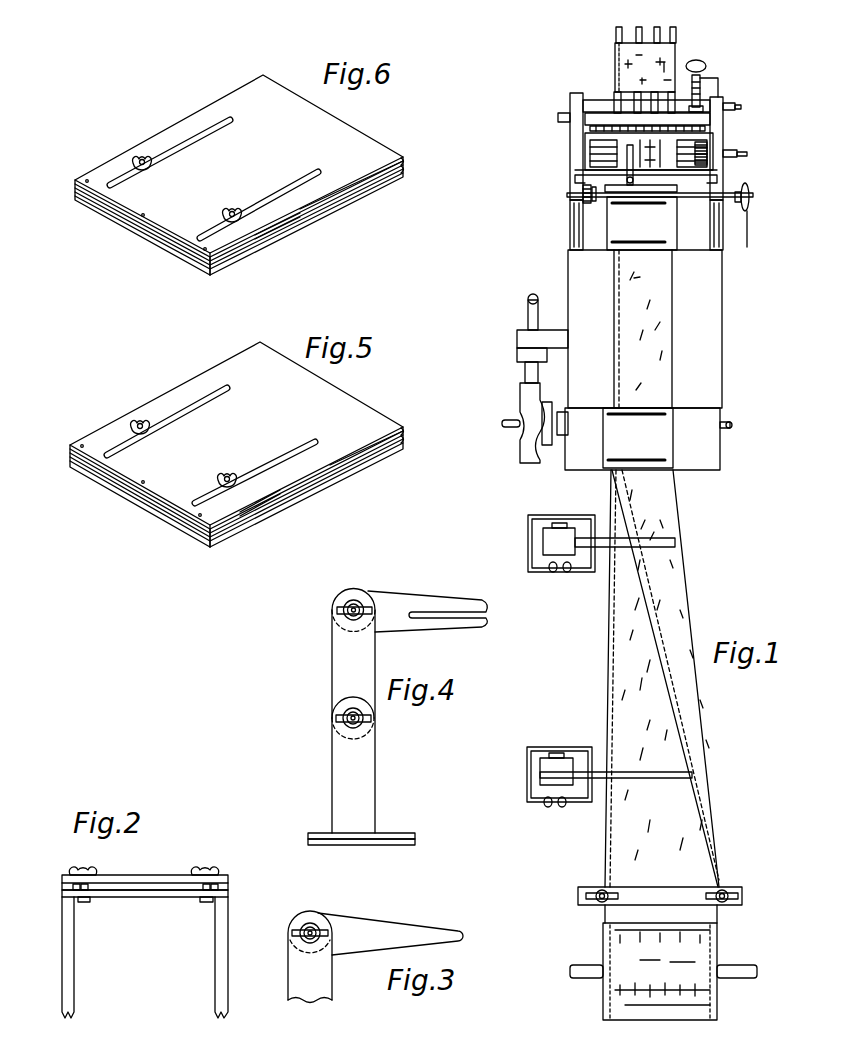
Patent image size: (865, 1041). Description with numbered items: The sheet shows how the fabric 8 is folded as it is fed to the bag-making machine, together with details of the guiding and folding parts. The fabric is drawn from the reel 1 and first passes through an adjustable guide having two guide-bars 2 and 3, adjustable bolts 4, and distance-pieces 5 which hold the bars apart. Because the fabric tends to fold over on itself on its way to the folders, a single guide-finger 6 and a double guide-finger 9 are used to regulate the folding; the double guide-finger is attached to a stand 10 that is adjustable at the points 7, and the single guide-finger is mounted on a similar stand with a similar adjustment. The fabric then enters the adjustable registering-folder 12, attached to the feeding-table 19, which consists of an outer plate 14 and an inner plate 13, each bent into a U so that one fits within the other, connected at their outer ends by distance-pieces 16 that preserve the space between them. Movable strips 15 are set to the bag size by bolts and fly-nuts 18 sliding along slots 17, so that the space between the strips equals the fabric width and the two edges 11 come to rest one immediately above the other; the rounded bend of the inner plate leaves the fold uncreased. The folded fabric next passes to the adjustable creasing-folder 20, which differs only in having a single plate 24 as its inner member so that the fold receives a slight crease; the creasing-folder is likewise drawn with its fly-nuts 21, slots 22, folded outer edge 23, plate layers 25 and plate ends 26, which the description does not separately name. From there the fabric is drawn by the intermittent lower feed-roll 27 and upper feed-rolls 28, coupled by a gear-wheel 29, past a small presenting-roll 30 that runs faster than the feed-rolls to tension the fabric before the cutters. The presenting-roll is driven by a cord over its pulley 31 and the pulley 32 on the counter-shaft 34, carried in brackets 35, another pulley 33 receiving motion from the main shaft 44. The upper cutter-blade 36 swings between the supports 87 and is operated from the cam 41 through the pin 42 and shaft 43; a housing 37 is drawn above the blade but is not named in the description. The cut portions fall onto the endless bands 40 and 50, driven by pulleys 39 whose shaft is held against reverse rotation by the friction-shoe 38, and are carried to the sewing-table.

In FIG. 1, the reel 1 is at (663, 971).
In FIG. 1, the guide-bar 2 is at (735, 888).
In FIG. 2, the guide-bar 2 is at (228, 878).
In FIG. 2, the guide-bar 3 is at (228, 890).
In FIG. 2, the adjustable bolts 4 is at (78, 862).
In FIG. 2, the distance-pieces 5 is at (62, 887).
In FIG. 1, the single guide-finger 6 is at (616, 785).
In FIG. 3, the single guide-finger 6 is at (387, 928).
In FIG. 1, the adjustment points 7 is at (567, 572).
In FIG. 4, the adjustment points 7 is at (337, 610).
In FIG. 3, the adjustment points 7 is at (292, 935).
In FIG. 1, the fabric 8 is at (667, 608).
In FIG. 1, the double guide-finger 9 is at (675, 548).
In FIG. 4, the double guide-finger 9 is at (453, 603).
In FIG. 1, the stand 10 is at (532, 767).
In FIG. 4, the stand 10 is at (362, 782).
In FIG. 1, the edges 11 is at (613, 322).
In FIG. 5, the adjustable registering-folder 12 is at (236, 444).
In FIG. 1, the adjustable registering-folder 12 is at (660, 433).
In FIG. 5, the inner plate 13 is at (380, 445).
In FIG. 5, the outer plate 14 is at (404, 422).
In FIG. 5, the movable strips 15 is at (262, 508).
In FIG. 5, the distance-pieces 16 is at (213, 530).
In FIG. 5, the slots 17 is at (226, 387).
In FIG. 5, the bolts and fly-nuts 18 is at (150, 420).
In FIG. 1, the feeding-table 19 is at (702, 297).
In FIG. 6, the adjustable creasing-folder 20 is at (239, 175).
In FIG. 1, the adjustable creasing-folder 20 is at (642, 223).
In FIG. 6, the wing nut 21 is at (152, 155).
In FIG. 6, the slot 22 is at (233, 119).
In FIG. 6, the fold 23 is at (389, 144).
In FIG. 6, the single plate 24 is at (390, 178).
In FIG. 6, the sheet layers 25 is at (268, 243).
In FIG. 6, the sheet ends 26 is at (212, 270).
In FIG. 1, the lower feed-roll 27 is at (608, 143).
In FIG. 1, the upper feed-rolls 28 is at (708, 137).
In FIG. 1, the gear-wheel 29 is at (710, 160).
In FIG. 1, the presenting-roll 30 is at (600, 127).
In FIG. 1, the pulley 31 is at (588, 125).
In FIG. 1, the pulley 32 is at (587, 205).
In FIG. 1, the pulley 33 is at (750, 202).
In FIG. 1, the counter-shaft 34 is at (685, 197).
In FIG. 1, the brackets 35 is at (572, 227).
In FIG. 1, the upper cutter-blade 36 is at (558, 113).
In FIG. 1, the cutter housing 37 is at (680, 50).
In FIG. 1, the friction-shoe 38 is at (695, 95).
In FIG. 1, the pulleys 39 is at (615, 92).
In FIG. 1, the endless bands 40 is at (640, 22).
In FIG. 1, the cam 41 is at (535, 462).
In FIG. 1, the pin 42 is at (530, 385).
In FIG. 1, the shaft 43 is at (527, 300).
In FIG. 1, the main shaft 44 is at (502, 422).
In FIG. 1, the endless band 50 is at (615, 30).
In FIG. 1, the supports 87 is at (578, 115).